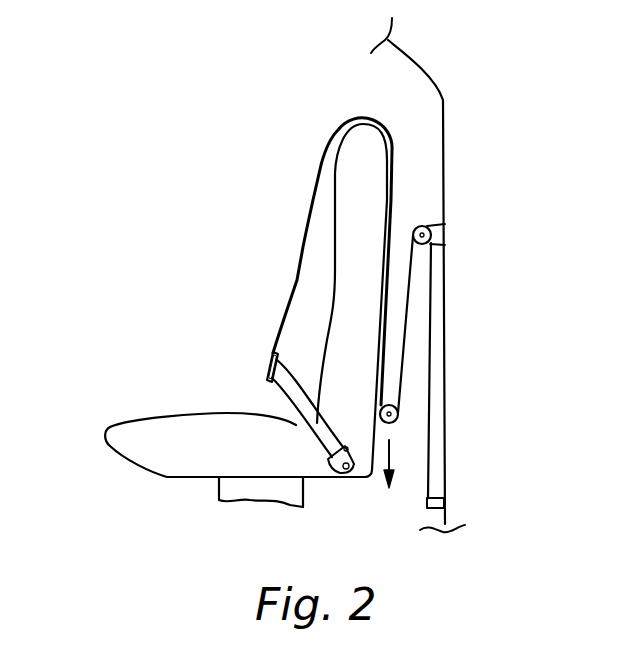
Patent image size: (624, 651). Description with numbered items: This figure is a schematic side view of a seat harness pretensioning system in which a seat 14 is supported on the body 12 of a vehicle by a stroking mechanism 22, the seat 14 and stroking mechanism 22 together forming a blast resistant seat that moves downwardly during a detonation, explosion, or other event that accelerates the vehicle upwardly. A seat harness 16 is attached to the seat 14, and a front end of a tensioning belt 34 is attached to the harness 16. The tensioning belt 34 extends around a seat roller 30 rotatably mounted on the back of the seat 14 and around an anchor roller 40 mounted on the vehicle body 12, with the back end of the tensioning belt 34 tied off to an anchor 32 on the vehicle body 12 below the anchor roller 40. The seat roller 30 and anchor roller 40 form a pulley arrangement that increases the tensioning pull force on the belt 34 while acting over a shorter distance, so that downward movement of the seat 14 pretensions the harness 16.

The vehicle body 12 is at (446, 162).
The seat 14 is at (158, 428).
The seat harness 16 is at (268, 358).
The stroking mechanism 22 is at (227, 491).
The seat roller 30 is at (396, 403).
The anchor 32 is at (440, 498).
The tensioning belt 34 is at (300, 262).
The anchor roller 40 is at (419, 226).